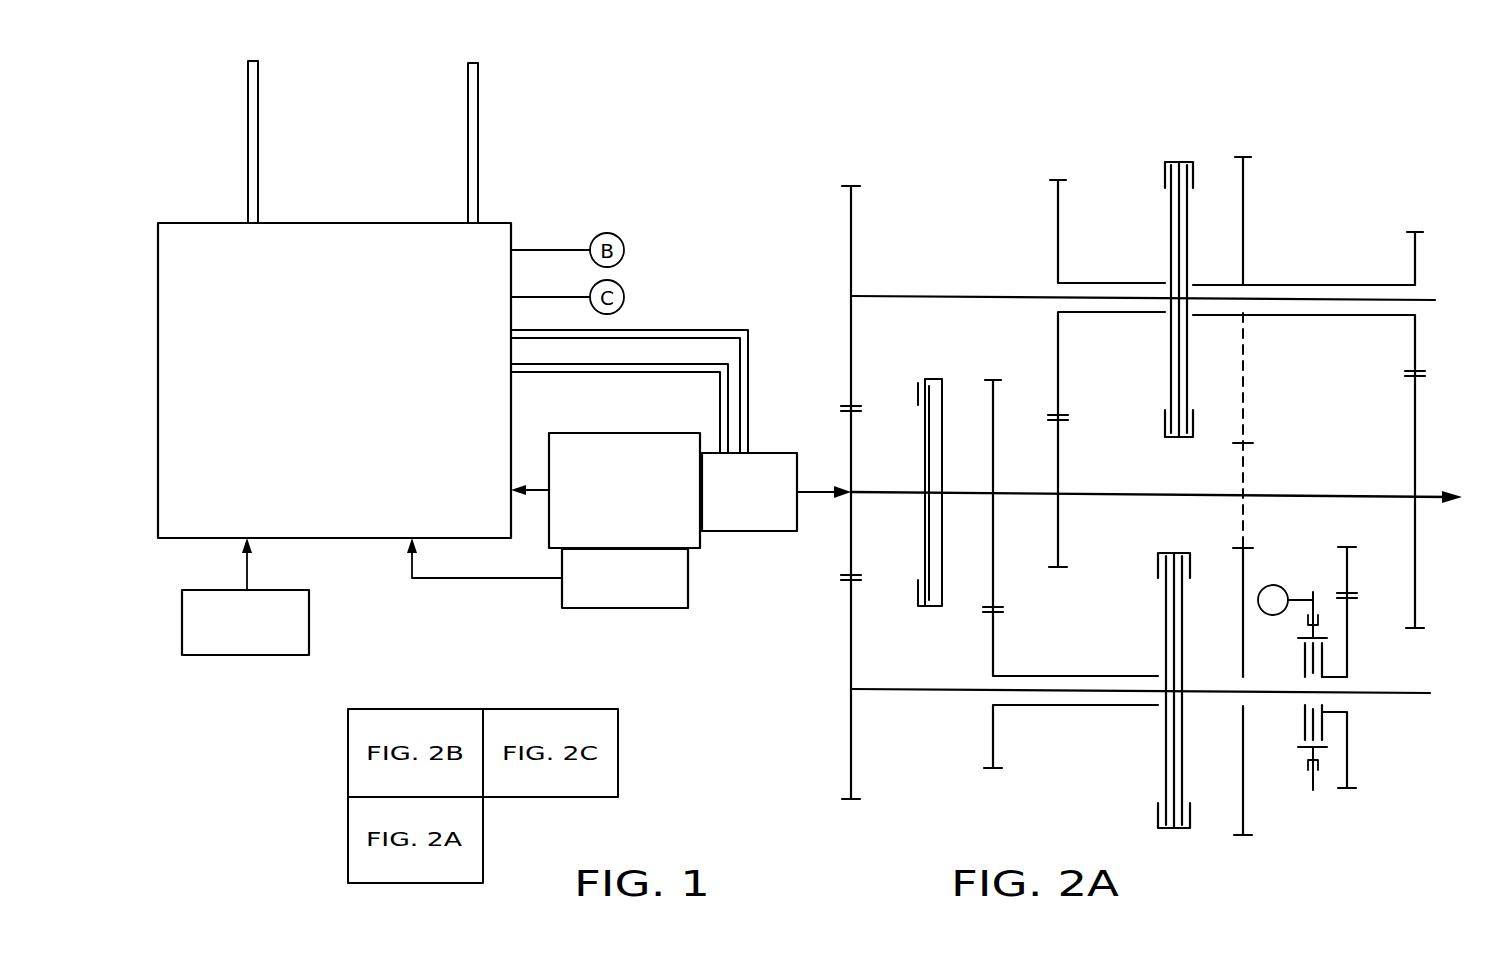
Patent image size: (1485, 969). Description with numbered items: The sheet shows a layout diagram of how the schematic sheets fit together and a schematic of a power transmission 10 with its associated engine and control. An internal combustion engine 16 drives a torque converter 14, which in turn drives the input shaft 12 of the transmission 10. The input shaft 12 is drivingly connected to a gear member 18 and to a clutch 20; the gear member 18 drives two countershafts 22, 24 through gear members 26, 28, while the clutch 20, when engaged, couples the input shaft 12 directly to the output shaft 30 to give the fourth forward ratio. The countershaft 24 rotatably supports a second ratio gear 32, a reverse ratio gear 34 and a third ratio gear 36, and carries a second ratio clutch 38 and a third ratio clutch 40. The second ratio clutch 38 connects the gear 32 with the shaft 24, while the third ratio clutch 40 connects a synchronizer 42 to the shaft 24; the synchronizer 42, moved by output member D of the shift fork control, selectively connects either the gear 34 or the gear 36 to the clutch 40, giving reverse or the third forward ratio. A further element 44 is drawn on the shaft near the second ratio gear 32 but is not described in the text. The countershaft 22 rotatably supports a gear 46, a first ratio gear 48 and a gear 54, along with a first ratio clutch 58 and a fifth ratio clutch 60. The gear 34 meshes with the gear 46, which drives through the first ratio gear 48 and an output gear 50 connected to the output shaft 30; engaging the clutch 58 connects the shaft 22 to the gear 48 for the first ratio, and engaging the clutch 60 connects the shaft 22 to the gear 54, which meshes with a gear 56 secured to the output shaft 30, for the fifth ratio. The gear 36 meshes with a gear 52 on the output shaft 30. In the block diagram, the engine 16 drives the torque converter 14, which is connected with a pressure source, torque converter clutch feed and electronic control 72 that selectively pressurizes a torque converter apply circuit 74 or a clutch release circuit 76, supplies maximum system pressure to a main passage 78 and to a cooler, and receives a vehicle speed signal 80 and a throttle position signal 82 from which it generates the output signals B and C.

In FIG. 2A, the power transmission 10 is at (943, 125).
In FIG. 2A, the input shaft 12 is at (838, 497).
In FIG. 1, the torque converter 14 is at (744, 523).
In FIG. 1, the internal combustion engine 16 is at (600, 447).
In FIG. 2A, the gear member 18 is at (851, 541).
In FIG. 2A, the clutch 20 is at (934, 376).
In FIG. 2A, the countershaft 22 is at (995, 295).
In FIG. 2A, the countershaft 24 is at (940, 690).
In FIG. 2A, the gear member 26 is at (853, 225).
In FIG. 2A, the gear member 28 is at (849, 754).
In FIG. 2A, the output shaft 30 is at (1423, 495).
In FIG. 2A, the second ratio gear 32 is at (990, 732).
In FIG. 2A, the reverse ratio gear 34 is at (1243, 830).
In FIG. 2A, the third ratio gear 36 is at (1350, 750).
In FIG. 2A, the second ratio clutch 38 is at (1155, 830).
In FIG. 2A, the third ratio clutch 40 is at (1193, 828).
In FIG. 2A, the synchronizer 42 is at (1300, 747).
In FIG. 2A, the gear member 44 is at (993, 588).
In FIG. 2A, the gear 46 is at (1247, 228).
In FIG. 2A, the first ratio gear 48 is at (1420, 243).
In FIG. 2A, the output gear 50 is at (1416, 553).
In FIG. 2A, the gear 52 is at (1345, 465).
In FIG. 2A, the gear 54 is at (1057, 207).
In FIG. 2A, the gear 56 is at (1058, 447).
In FIG. 2A, the first ratio clutch 58 is at (1195, 166).
In FIG. 2A, the fifth ratio clutch 60 is at (1165, 170).
In FIG. 1, the pressure source, torque converter clutch feed and electronic control 72 is at (488, 243).
In FIG. 1, the torque converter apply circuit 74 is at (663, 334).
In FIG. 1, the torque converter clutch release circuit 76 is at (623, 372).
In FIG. 1, the main passage 78 is at (470, 191).
In FIG. 1, the vehicle speed signal 80 is at (282, 651).
In FIG. 1, the throttle position signal 82 is at (637, 607).